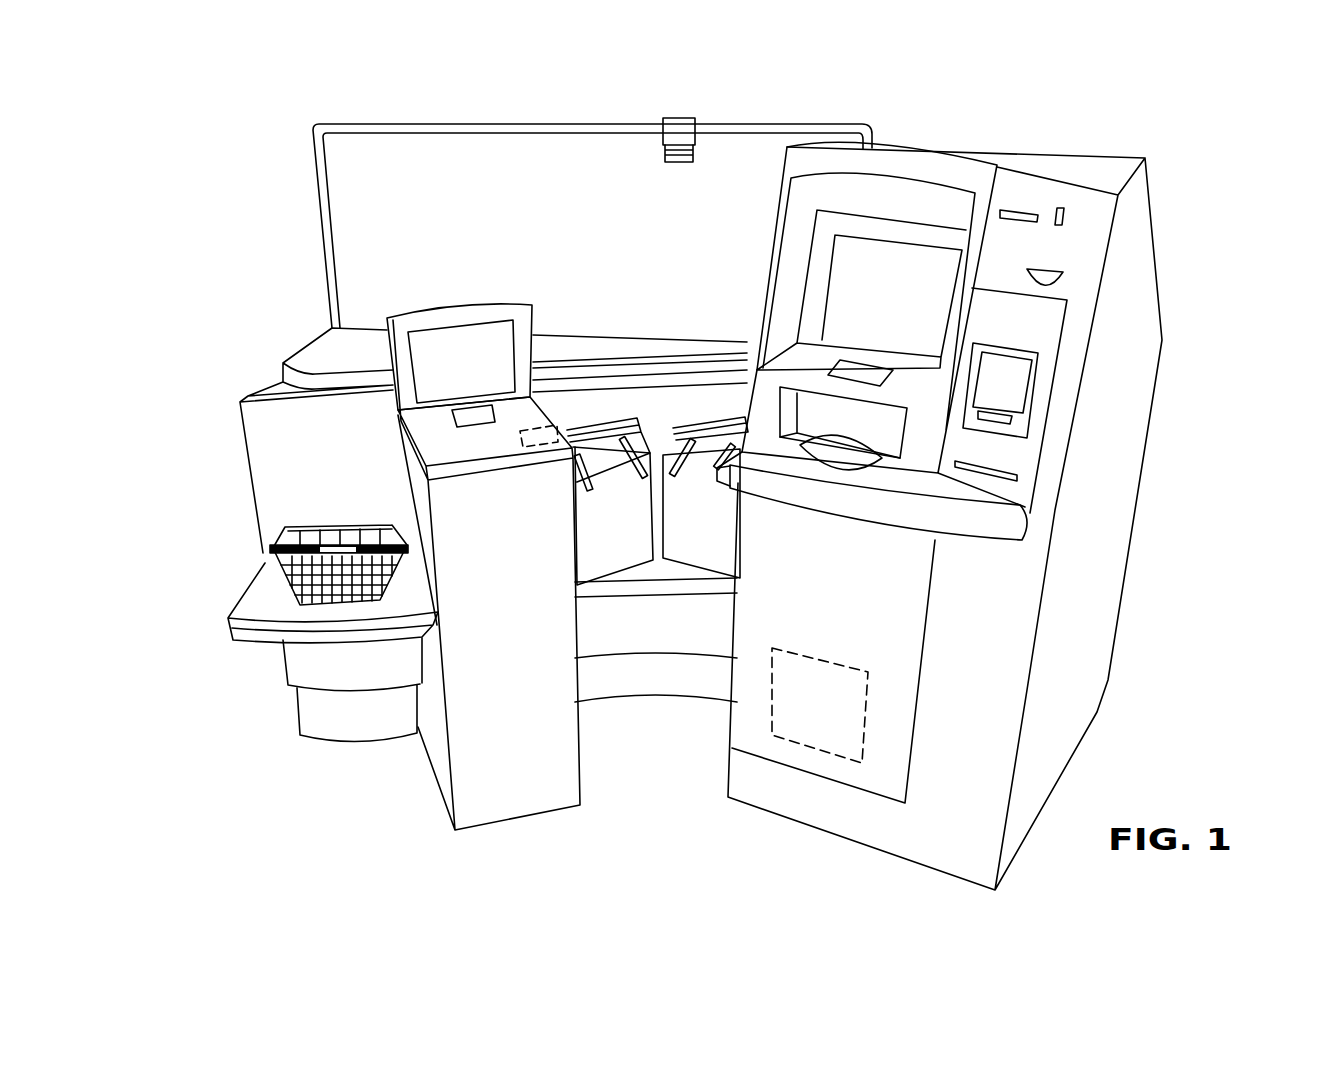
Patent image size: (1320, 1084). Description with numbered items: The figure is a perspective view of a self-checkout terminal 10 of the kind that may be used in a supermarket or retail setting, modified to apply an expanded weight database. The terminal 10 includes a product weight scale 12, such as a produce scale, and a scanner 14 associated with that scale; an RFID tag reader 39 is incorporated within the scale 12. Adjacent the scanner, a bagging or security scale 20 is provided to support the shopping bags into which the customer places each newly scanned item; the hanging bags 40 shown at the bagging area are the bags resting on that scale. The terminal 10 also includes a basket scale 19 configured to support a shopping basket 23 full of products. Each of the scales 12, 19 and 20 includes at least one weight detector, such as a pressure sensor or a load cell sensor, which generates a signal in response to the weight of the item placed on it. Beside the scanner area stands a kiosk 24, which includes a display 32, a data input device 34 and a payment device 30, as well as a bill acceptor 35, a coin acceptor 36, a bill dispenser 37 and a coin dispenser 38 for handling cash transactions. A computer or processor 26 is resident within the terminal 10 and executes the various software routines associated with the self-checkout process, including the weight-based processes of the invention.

The self-checkout terminal 10 is at (250, 224).
The product weight scale 12 is at (435, 443).
The scanner 14 is at (494, 298).
The basket scale 19 is at (268, 640).
The bagging or security scale 20 is at (728, 588).
The shopping basket 23 is at (293, 525).
The kiosk 24 is at (1135, 315).
The computer or processor 26 is at (822, 672).
The payment device 30 is at (1012, 418).
The display 32 is at (843, 257).
The data input device 34 is at (855, 370).
The bill acceptor 35 is at (1016, 210).
The coin acceptor 36 is at (1066, 217).
The bill dispenser 37 is at (1018, 477).
The coin dispenser 38 is at (1052, 272).
The RFID tag reader 39 is at (535, 452).
The bagging station 40 is at (593, 540).